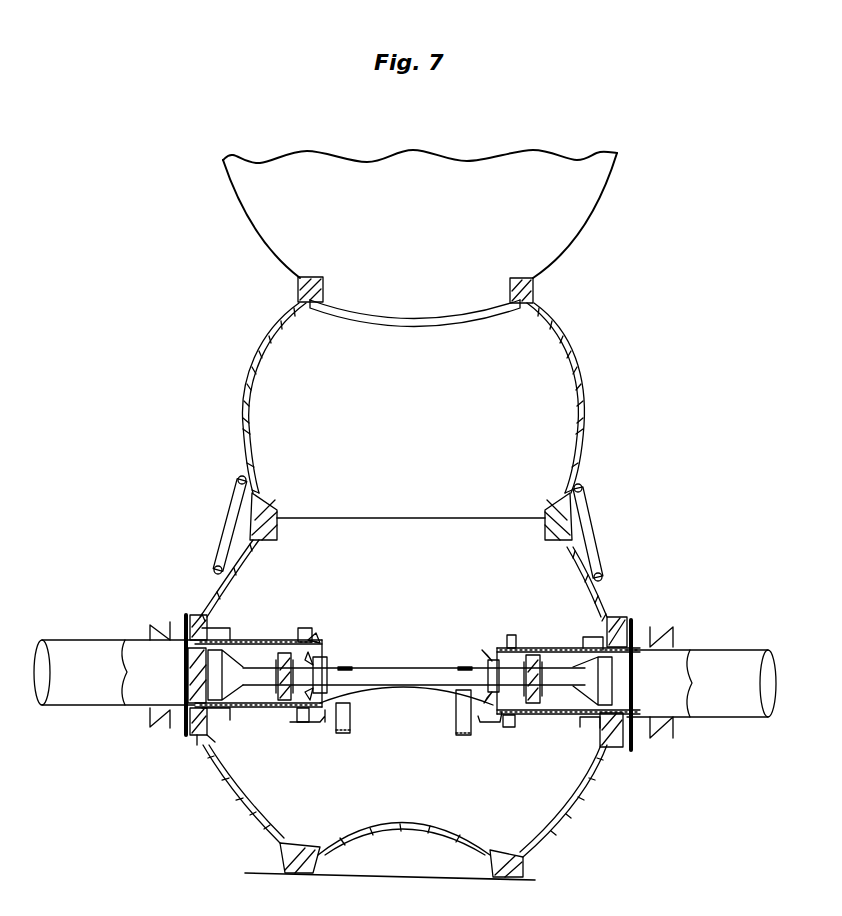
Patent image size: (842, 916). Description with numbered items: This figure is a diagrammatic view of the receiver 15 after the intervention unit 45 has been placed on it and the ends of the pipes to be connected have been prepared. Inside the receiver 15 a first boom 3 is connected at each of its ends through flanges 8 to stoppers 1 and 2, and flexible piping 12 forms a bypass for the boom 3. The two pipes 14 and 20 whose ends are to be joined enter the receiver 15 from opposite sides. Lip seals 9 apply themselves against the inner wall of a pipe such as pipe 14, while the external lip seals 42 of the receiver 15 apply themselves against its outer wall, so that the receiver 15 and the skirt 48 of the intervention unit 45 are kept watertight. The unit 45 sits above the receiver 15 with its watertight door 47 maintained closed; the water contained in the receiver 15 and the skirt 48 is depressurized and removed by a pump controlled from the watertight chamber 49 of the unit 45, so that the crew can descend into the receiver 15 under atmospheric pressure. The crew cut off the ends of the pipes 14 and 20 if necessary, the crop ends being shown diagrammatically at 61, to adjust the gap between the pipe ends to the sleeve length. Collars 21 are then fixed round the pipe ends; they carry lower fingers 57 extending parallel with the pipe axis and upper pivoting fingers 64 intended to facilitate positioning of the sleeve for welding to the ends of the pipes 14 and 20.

The stopper 1 is at (257, 680).
The stopper 2 is at (562, 687).
The first boom 3 is at (403, 673).
The flange 8 is at (323, 667).
The lip seal 9 is at (185, 650).
The flexible piping 12 is at (380, 698).
The pipe 14 is at (90, 637).
The receiver 15 is at (212, 588).
The pipe 20 is at (725, 660).
The collar 21 is at (303, 630).
The external lip seal 42 is at (185, 732).
The intervention unit 45 is at (614, 228).
The watertight door 47 is at (397, 331).
The skirt 48 is at (578, 378).
The watertight chamber 49 is at (263, 216).
The lower finger 57 is at (317, 715).
The crop end 61 is at (457, 737).
The upper pivoting finger 64 is at (313, 637).